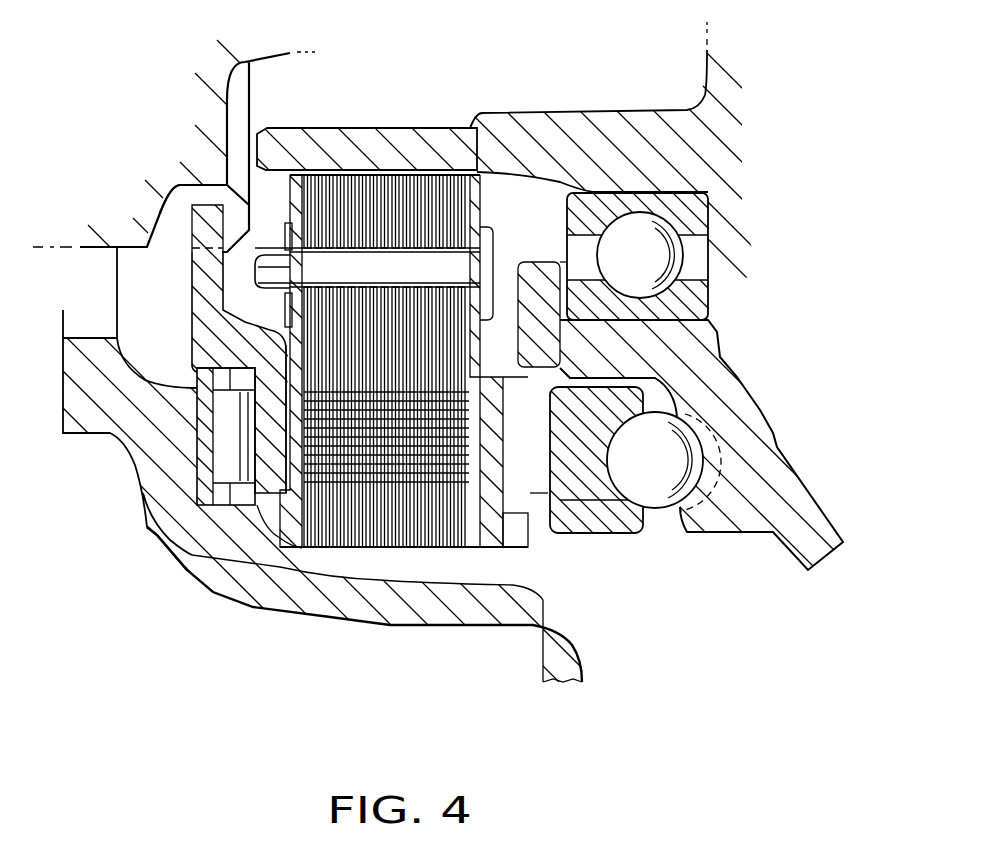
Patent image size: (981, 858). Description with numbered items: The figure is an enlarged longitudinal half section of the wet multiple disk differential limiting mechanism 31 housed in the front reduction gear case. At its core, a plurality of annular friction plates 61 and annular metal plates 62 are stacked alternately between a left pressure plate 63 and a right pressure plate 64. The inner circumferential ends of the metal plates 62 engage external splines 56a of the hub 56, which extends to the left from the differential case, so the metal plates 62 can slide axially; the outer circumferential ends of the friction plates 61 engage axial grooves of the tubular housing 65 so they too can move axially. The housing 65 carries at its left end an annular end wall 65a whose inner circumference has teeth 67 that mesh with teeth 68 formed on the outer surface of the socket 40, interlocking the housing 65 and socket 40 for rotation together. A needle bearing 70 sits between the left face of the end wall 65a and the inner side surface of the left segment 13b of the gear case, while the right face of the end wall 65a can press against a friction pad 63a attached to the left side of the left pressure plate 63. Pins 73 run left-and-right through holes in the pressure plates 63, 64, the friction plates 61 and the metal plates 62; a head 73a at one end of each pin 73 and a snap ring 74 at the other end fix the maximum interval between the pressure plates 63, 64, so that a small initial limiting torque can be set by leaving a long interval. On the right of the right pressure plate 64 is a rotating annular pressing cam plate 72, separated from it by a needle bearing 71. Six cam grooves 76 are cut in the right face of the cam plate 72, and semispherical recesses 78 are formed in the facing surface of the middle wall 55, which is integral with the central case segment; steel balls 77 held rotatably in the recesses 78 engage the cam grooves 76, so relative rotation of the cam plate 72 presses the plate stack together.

The socket 40 is at (188, 105).
The teeth 68 is at (197, 193).
The teeth 67 is at (197, 227).
The pin 73 is at (300, 265).
The snap ring 74 is at (290, 303).
The left pressure plate 63 is at (197, 338).
The friction pad 63a is at (287, 437).
The needle bearing 70 is at (223, 468).
The left segment 13b is at (157, 525).
The annular end wall 65a is at (180, 562).
The tubular housing 65 is at (257, 572).
The wet multiple disk differential limiting mechanism 31 is at (360, 552).
The annular friction plate 61 is at (478, 520).
The annular metal plate 62 is at (313, 177).
The hub 56 is at (375, 133).
The external splines 56a is at (487, 180).
The right pressure plate 64 is at (495, 292).
The head 73a is at (495, 232).
The middle wall 55 is at (750, 517).
The pressing cam plate 72 is at (590, 523).
The cam groove 76 is at (610, 498).
The needle bearing 71 is at (543, 495).
The ball 77 is at (660, 498).
The semispherical recess 78 is at (713, 498).